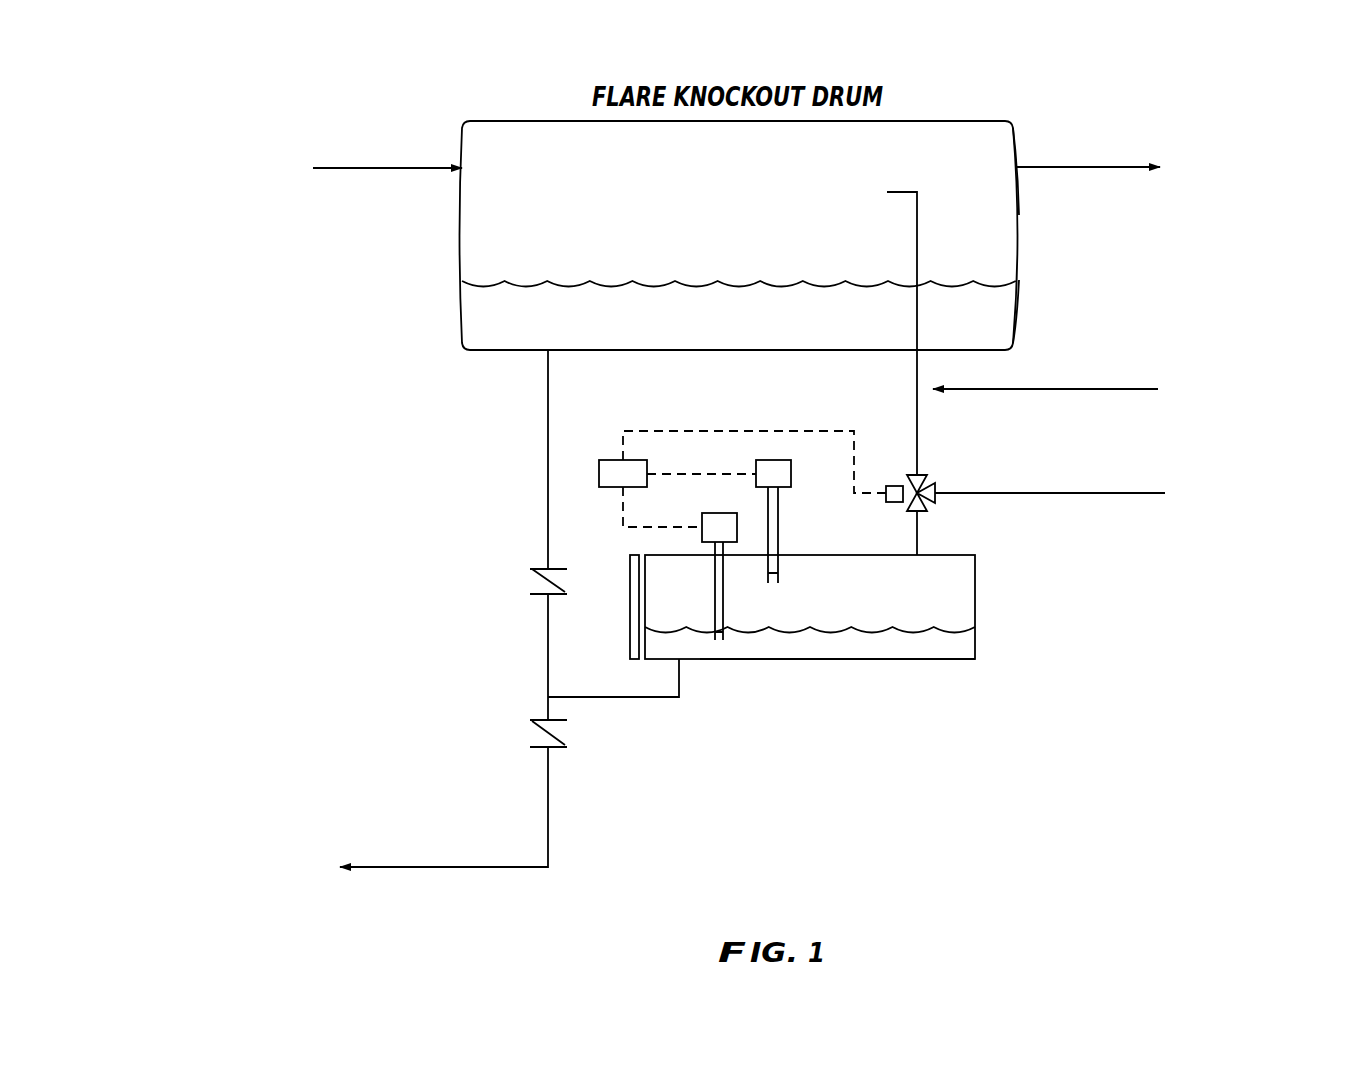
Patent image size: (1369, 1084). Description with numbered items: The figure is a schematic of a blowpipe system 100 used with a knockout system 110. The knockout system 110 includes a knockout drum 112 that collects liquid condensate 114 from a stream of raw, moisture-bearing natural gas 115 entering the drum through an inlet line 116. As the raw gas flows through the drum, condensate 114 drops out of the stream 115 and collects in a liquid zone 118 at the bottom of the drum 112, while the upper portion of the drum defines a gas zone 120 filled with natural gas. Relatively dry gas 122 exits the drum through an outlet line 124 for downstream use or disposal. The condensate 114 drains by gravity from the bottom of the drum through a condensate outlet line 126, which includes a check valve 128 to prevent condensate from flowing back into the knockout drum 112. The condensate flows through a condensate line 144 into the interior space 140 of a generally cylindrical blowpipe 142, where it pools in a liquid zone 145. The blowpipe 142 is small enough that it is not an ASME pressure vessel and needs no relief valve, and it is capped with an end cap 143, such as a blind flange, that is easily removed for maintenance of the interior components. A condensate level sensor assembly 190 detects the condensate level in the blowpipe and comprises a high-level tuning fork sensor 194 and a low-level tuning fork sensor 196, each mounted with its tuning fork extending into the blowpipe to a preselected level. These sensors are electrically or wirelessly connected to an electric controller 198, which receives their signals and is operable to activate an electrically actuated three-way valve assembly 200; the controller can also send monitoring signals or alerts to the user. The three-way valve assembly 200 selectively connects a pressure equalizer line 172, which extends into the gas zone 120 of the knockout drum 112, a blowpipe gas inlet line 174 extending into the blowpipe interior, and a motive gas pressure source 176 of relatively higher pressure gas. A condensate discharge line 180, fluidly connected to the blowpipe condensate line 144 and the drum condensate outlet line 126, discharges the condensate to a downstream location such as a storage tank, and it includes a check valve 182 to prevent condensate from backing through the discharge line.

The blowpipe system 100 is at (385, 633).
The knockout system 110 is at (378, 253).
The knockout drum 112 is at (975, 120).
The liquid condensate 114 is at (490, 318).
The raw natural gas stream 115 is at (100, 150).
The inlet line 116 is at (388, 168).
The liquid zone 118 is at (1013, 323).
The gas zone 120 is at (1018, 215).
The dry gas 122 is at (1253, 150).
The outlet line 124 is at (1080, 167).
The condensate outlet line 126 is at (548, 449).
The check valve 128 is at (556, 587).
The interior space 140 is at (955, 589).
The blowpipe 142 is at (925, 660).
The end cap 143 is at (630, 618).
The condensate line 144 is at (656, 698).
The liquid zone 145 is at (978, 645).
The pressure equalizer line 172 is at (917, 370).
The blowpipe gas inlet line 174 is at (917, 538).
The motive gas pressure source 176 is at (1307, 537).
The condensate discharge line 180 is at (548, 808).
The check valve 182 is at (552, 738).
The condensate level sensor assembly 190 is at (612, 519).
The high-level tuning fork sensor 194 is at (778, 505).
The low-level tuning fork sensor 196 is at (723, 617).
The electric controller 198 is at (603, 460).
The three-way valve assembly 200 is at (950, 465).